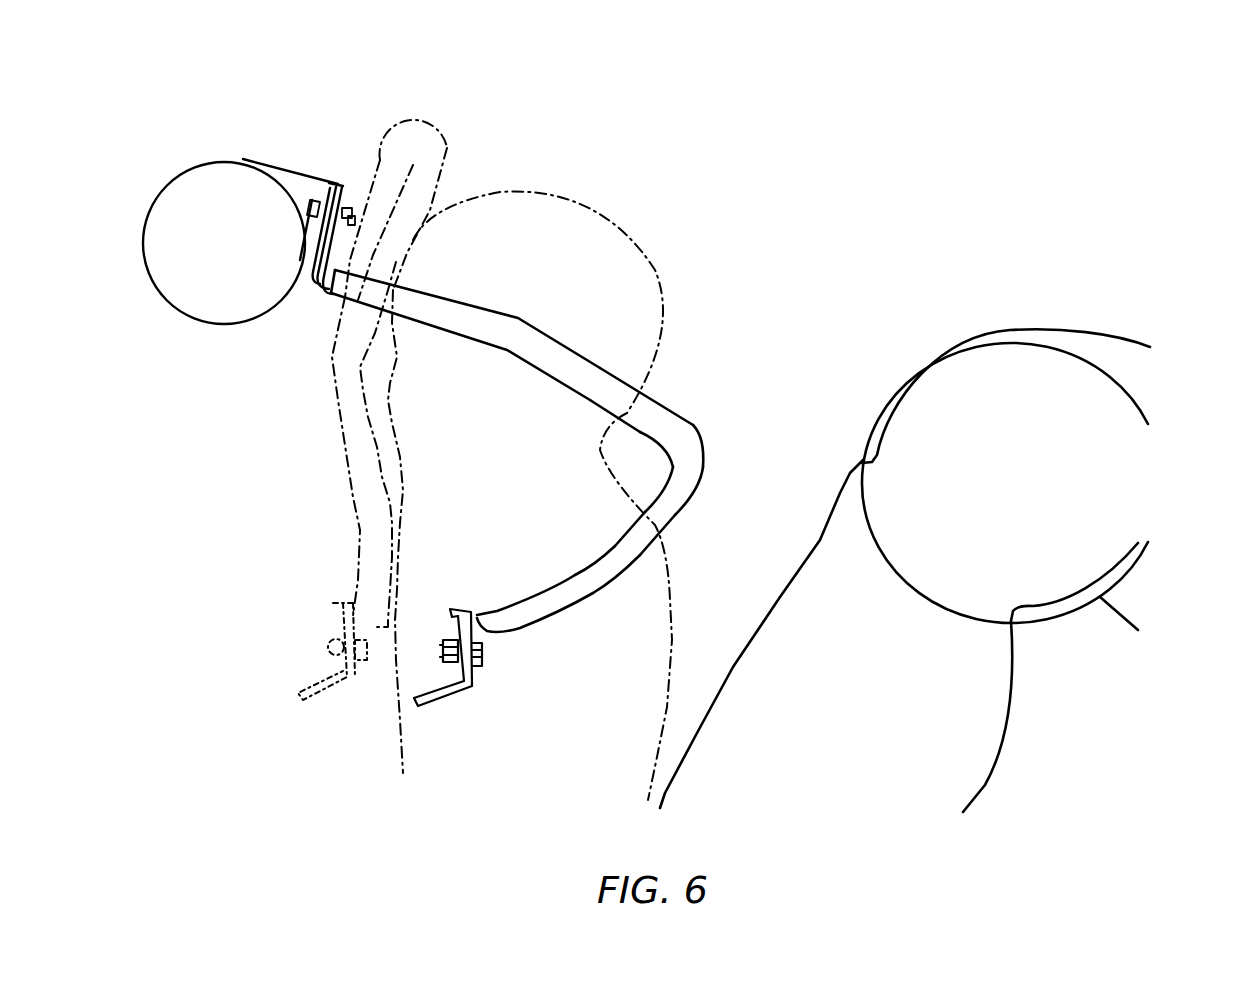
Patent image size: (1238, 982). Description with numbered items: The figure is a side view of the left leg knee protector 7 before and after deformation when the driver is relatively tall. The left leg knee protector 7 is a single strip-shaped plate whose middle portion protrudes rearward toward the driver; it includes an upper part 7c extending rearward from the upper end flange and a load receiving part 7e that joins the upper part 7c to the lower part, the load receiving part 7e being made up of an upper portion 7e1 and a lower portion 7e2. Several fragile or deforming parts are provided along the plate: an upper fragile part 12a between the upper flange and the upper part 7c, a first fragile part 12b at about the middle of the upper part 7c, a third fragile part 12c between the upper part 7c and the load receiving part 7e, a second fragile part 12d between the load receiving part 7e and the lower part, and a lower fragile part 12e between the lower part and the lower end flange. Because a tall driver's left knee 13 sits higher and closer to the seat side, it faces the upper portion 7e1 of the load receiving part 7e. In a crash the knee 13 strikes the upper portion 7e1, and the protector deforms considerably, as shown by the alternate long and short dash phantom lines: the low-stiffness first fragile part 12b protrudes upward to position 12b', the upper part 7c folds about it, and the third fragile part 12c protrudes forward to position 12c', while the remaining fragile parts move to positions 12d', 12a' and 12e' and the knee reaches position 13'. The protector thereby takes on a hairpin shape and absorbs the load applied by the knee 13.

The left leg knee protector 7 is at (707, 373).
The upper part 7c is at (563, 363).
The load receiving part 7e is at (673, 526).
The upper portion 7e1 is at (688, 490).
The lower portion 7e2 is at (628, 580).
The upper fragile part 12a is at (249, 262).
The upper fragile part in deformed position 12a' is at (267, 349).
The first fragile part 12b is at (465, 318).
The first fragile part in deformed position 12b' is at (437, 179).
The third fragile part 12c is at (727, 433).
The third fragile part in deformed position 12c' is at (453, 495).
The second fragile part 12d is at (563, 625).
The second fragile part in deformed position 12d' is at (317, 531).
The lower fragile part 12e is at (490, 664).
The lower fragile part in deformed position 12e' is at (299, 651).
The left knee 13 is at (905, 570).
The left knee in deformed state 13' is at (329, 444).